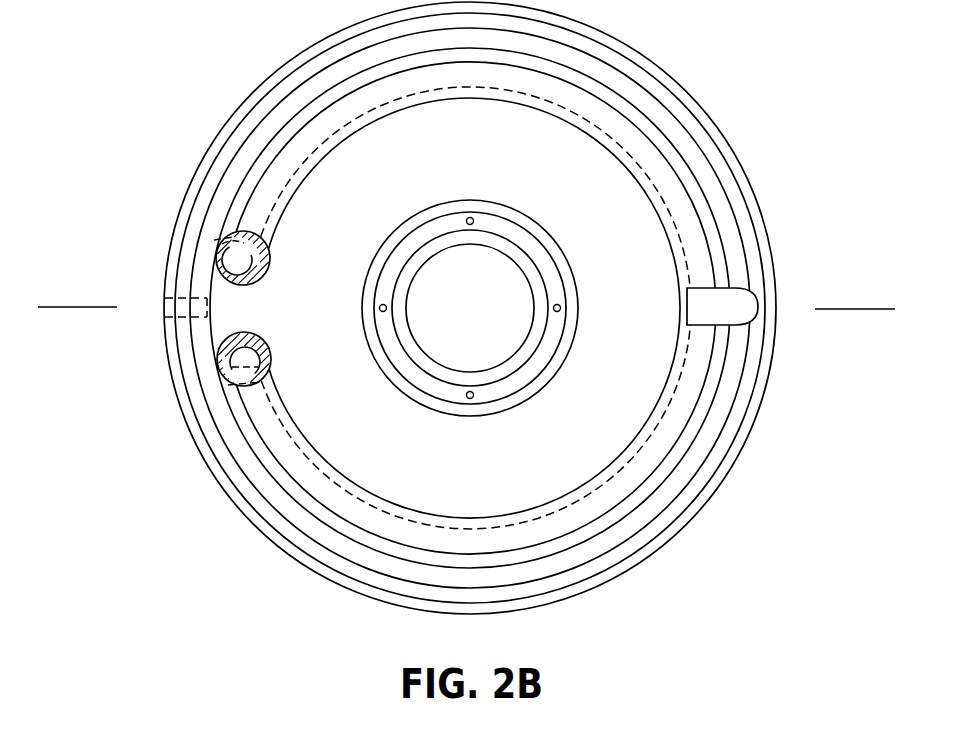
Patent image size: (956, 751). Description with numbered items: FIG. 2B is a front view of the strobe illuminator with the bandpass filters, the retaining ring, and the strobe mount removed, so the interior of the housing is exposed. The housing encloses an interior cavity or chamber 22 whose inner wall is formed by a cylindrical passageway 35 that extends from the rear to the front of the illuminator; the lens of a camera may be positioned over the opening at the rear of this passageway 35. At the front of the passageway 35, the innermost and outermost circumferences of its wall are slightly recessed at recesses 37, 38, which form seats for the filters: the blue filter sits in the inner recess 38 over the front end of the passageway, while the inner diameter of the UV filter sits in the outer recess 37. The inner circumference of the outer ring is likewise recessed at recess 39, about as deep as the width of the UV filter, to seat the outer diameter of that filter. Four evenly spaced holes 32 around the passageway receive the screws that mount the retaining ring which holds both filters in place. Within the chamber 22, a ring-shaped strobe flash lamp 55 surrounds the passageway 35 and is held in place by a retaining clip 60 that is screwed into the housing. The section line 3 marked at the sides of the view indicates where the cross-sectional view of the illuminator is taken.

The interior chamber 22 is at (487, 157).
The holes 32 is at (473, 218).
The cylindrical passageway 35 is at (487, 323).
The outer recess 37 is at (553, 250).
The inner recess 38 is at (520, 353).
The outer ring recess 39 is at (672, 515).
The ring-shaped strobe flash lamp 55 is at (283, 163).
The retaining clip 60 is at (737, 321).
The section line 3- 3 is at (466, 330).